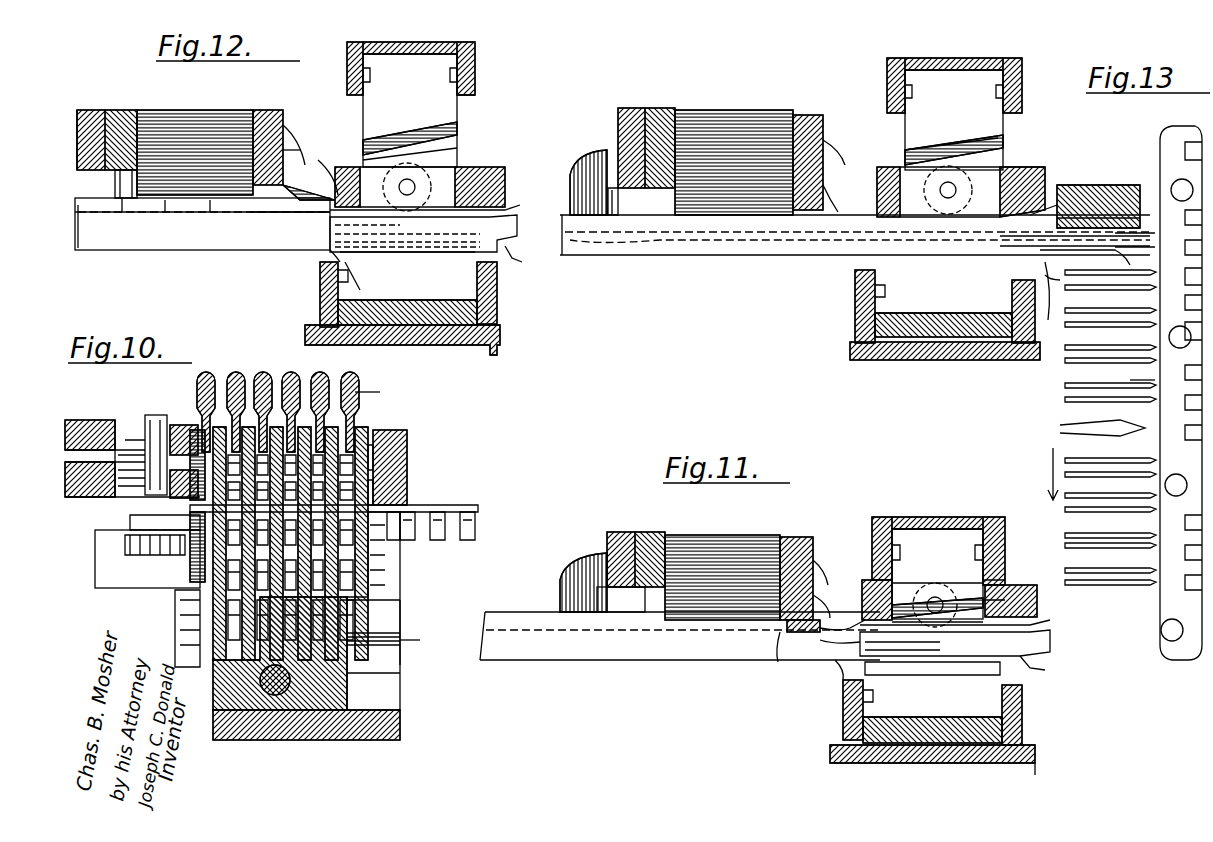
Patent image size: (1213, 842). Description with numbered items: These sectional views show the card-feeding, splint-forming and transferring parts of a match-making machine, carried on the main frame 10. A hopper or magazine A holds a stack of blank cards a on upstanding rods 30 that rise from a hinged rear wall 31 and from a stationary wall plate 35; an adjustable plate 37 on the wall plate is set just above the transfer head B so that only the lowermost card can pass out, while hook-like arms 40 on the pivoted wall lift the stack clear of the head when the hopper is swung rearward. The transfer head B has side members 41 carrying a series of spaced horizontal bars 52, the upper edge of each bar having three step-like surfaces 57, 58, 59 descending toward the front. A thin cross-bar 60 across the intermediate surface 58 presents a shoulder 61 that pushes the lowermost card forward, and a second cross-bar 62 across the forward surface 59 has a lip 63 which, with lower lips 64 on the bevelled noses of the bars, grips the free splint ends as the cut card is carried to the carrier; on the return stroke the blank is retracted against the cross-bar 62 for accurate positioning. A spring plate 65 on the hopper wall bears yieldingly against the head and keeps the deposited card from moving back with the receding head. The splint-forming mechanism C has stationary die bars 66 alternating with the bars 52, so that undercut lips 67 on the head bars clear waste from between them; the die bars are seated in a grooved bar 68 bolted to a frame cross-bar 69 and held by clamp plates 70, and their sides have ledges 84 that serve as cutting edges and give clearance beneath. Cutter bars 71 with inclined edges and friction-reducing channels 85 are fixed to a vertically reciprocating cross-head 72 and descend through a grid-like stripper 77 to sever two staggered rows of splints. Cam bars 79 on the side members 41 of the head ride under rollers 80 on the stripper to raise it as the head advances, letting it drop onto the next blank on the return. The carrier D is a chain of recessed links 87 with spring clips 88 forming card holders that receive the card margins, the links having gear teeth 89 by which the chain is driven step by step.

In FIG. 11, the machine base 10 is at (842, 690).
In FIG. 12, the upstanding rods 30 is at (128, 210).
In FIG. 13, the upstanding rods 30 is at (660, 218).
In FIG. 11, the upstanding rods 30 is at (645, 620).
In FIG. 12, the rear wall 31 is at (80, 110).
In FIG. 13, the rear wall 31 is at (628, 108).
In FIG. 11, the rear wall 31 is at (607, 535).
In FIG. 12, the stationary wall plate 35 is at (296, 133).
In FIG. 13, the stationary wall plate 35 is at (848, 135).
In FIG. 11, the stationary wall plate 35 is at (825, 555).
In FIG. 12, the vertically adjustable plate 37 is at (283, 118).
In FIG. 13, the vertically adjustable plate 37 is at (823, 118).
In FIG. 11, the vertically adjustable plate 37 is at (800, 537).
In FIG. 13, the hook-like arms 40 is at (592, 160).
In FIG. 11, the hook-like arms 40 is at (575, 578).
In FIG. 10, the side member of transfer head frame 41 is at (147, 559).
In FIG. 11, the side member of transfer head frame 41 is at (495, 612).
In FIG. 12, the horizontal bars 52 is at (275, 222).
In FIG. 10, the horizontal bars 52 is at (370, 580).
In FIG. 11, the horizontal bars 52 is at (700, 660).
In FIG. 12, the rearward step surface 57 is at (115, 208).
In FIG. 13, the rearward step surface 57 is at (762, 218).
In FIG. 10, the rearward step surface 57 is at (400, 590).
In FIG. 11, the rearward step surface 57 is at (525, 612).
In FIG. 12, the intermediate step surface 58 is at (238, 200).
In FIG. 13, the intermediate step surface 58 is at (985, 230).
In FIG. 11, the intermediate step surface 58 is at (755, 622).
In FIG. 12, the forward step surface 59 is at (360, 300).
In FIG. 13, the forward step surface 59 is at (1085, 257).
In FIG. 11, the forward step surface 59 is at (932, 667).
In FIG. 12, the sectional cross-bar 60 is at (160, 200).
In FIG. 13, the sectional cross-bar 60 is at (840, 258).
In FIG. 11, the sectional cross-bar 60 is at (621, 599).
In FIG. 12, the abutment or shoulder 61 is at (200, 200).
In FIG. 13, the abutment or shoulder 61 is at (925, 230).
In FIG. 11, the abutment or shoulder 61 is at (670, 620).
In FIG. 12, the sectional cross-bar 62 is at (328, 195).
In FIG. 13, the sectional cross-bar 62 is at (1022, 230).
In FIG. 11, the sectional cross-bar 62 is at (792, 640).
In FIG. 11, the lip or ledge 63 is at (832, 595).
In FIG. 12, the lips 64 is at (380, 282).
In FIG. 13, the lips 64 is at (1080, 285).
In FIG. 10, the lips 64 is at (386, 550).
In FIG. 11, the lips 64 is at (830, 650).
In FIG. 12, the spring plate 65 is at (290, 120).
In FIG. 13, the spring plate 65 is at (832, 200).
In FIG. 11, the spring plate 65 is at (805, 618).
In FIG. 12, the die bars 66 is at (517, 253).
In FIG. 13, the die bars 66 is at (858, 258).
In FIG. 10, the die bars 66 is at (395, 490).
In FIG. 11, the die bars 66 is at (1042, 666).
In FIG. 12, the undercut lip 67 is at (320, 250).
In FIG. 13, the undercut lip 67 is at (1057, 302).
In FIG. 11, the undercut lip 67 is at (805, 660).
In FIG. 12, the grooved bar 68 is at (497, 318).
In FIG. 13, the grooved bar 68 is at (985, 338).
In FIG. 10, the grooved bar 68 is at (400, 672).
In FIG. 11, the grooved bar 68 is at (985, 745).
In FIG. 12, the cross-bar 69 is at (500, 343).
In FIG. 13, the cross-bar 69 is at (893, 360).
In FIG. 10, the cross-bar 69 is at (372, 712).
In FIG. 11, the cross-bar 69 is at (880, 763).
In FIG. 12, the clamp plates 70 is at (497, 282).
In FIG. 10, the clamp plates 70 is at (400, 645).
In FIG. 11, the clamp plates 70 is at (1022, 730).
In FIG. 12, the cutter bars 71 is at (465, 104).
In FIG. 13, the cutter bars 71 is at (1012, 114).
In FIG. 10, the cutter bars 71 is at (362, 420).
In FIG. 11, the cutter bars 71 is at (1030, 580).
In FIG. 10, the cross-head 72 is at (400, 620).
In FIG. 12, the grid-like structure 77 is at (490, 170).
In FIG. 13, the grid-like structure 77 is at (1048, 172).
In FIG. 10, the grid-like structure 77 is at (98, 420).
In FIG. 11, the grid-like structure 77 is at (915, 530).
In FIG. 12, the cam bars 79 is at (296, 185).
In FIG. 13, the cam bars 79 is at (1128, 200).
In FIG. 10, the cam bars 79 is at (130, 522).
In FIG. 11, the cam bars 79 is at (835, 625).
In FIG. 12, the anti-friction rollers 80 is at (420, 166).
In FIG. 13, the anti-friction rollers 80 is at (905, 146).
In FIG. 10, the anti-friction rollers 80 is at (155, 415).
In FIG. 11, the anti-friction rollers 80 is at (1008, 556).
In FIG. 13, the longitudinal ledges 84 is at (945, 306).
In FIG. 10, the longitudinal ledges 84 is at (395, 465).
In FIG. 12, the longitudinal channels 85 is at (458, 130).
In FIG. 13, the longitudinal channels 85 is at (1005, 142).
In FIG. 10, the longitudinal channels 85 is at (400, 408).
In FIG. 11, the longitudinal channels 85 is at (1037, 600).
In FIG. 13, the recessed links 87 is at (1172, 648).
In FIG. 13, the spring clips 88 is at (1158, 444).
In FIG. 13, the gear teeth 89 is at (1200, 640).
In FIG. 12, the hopper or magazine A is at (122, 110).
In FIG. 13, the hopper or magazine A is at (648, 108).
In FIG. 11, the hopper or magazine A is at (640, 532).
In FIG. 12, the transfer head B is at (202, 224).
In FIG. 13, the transfer head B is at (855, 236).
In FIG. 11, the transfer head B is at (680, 636).
In FIG. 12, the splint-forming mechanism C is at (411, 104).
In FIG. 13, the splint-forming mechanism C is at (954, 114).
In FIG. 10, the splint-forming mechanism C is at (275, 385).
In FIG. 11, the splint-forming mechanism C is at (938, 568).
In FIG. 13, the carrier D is at (1158, 645).
In FIG. 12, the blank cards a is at (236, 112).
In FIG. 13, the blank cards a is at (745, 110).
In FIG. 10, the blank cards a is at (290, 543).
In FIG. 11, the blank cards a is at (758, 536).